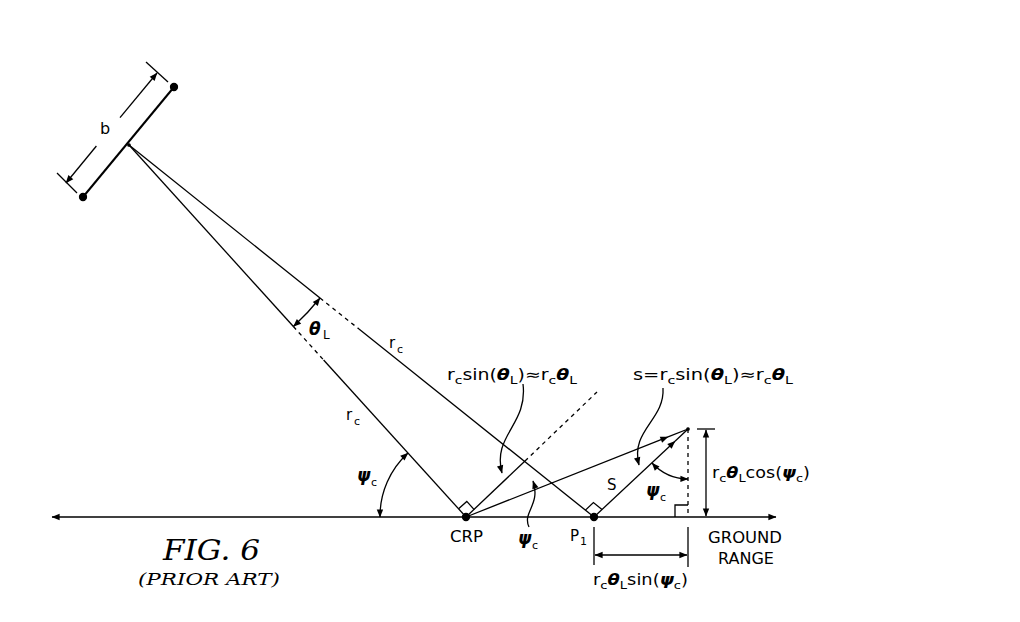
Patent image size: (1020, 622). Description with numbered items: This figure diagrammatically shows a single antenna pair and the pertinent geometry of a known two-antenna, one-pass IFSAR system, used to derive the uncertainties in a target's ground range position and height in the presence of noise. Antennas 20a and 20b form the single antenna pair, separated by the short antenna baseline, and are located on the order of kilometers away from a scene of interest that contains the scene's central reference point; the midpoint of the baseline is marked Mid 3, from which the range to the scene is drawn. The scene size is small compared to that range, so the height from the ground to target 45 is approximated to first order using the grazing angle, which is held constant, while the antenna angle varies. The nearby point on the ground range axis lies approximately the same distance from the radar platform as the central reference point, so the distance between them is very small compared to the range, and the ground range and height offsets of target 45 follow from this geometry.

The antenna 20a is at (177, 82).
The antenna 20b is at (80, 208).
The antenna baseline midpoint (Mid) 3 is at (133, 143).
The target 45 is at (690, 419).